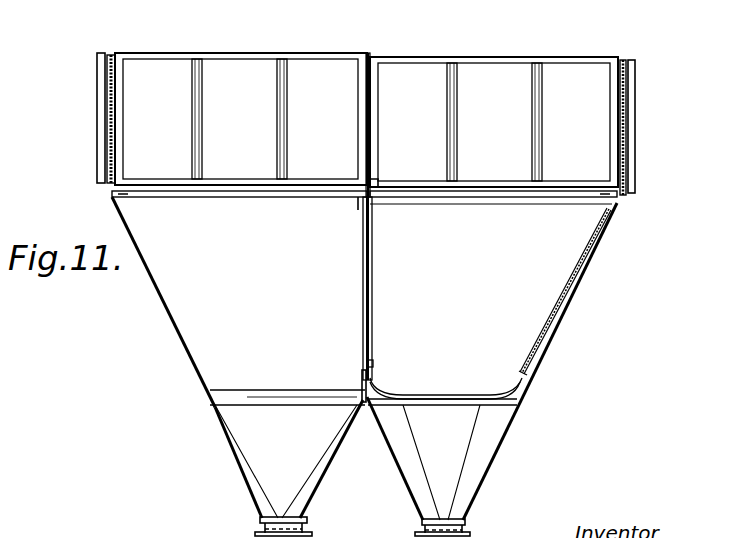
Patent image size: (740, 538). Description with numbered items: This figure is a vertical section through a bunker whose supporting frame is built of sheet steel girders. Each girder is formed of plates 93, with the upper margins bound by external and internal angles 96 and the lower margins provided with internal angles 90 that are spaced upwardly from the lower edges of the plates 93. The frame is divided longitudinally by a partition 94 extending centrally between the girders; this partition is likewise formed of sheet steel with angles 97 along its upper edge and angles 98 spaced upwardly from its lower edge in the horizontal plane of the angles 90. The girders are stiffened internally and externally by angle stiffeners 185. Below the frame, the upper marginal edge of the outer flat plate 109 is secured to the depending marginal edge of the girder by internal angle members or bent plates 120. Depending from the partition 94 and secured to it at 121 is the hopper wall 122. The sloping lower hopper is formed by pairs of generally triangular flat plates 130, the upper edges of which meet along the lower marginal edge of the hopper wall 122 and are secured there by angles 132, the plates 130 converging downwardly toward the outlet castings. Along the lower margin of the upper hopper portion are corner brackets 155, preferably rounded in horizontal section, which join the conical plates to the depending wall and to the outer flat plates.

The external and internal angles 96 is at (121, 53).
The plates 93 is at (623, 167).
The angles 97 is at (358, 61).
The partition 94 is at (367, 135).
The internal angles 90 is at (507, 54).
The angles 98 is at (378, 181).
The stiffeners 185 is at (282, 118).
The internal angle members or bent plates 120 is at (135, 199).
The securing point of hopper wall 121 is at (367, 217).
The depending hopper wall 122 is at (365, 302).
The flat plate 109 is at (175, 336).
The brackets 155 is at (380, 388).
The angles 132 is at (358, 398).
The flat plates 130 is at (385, 449).